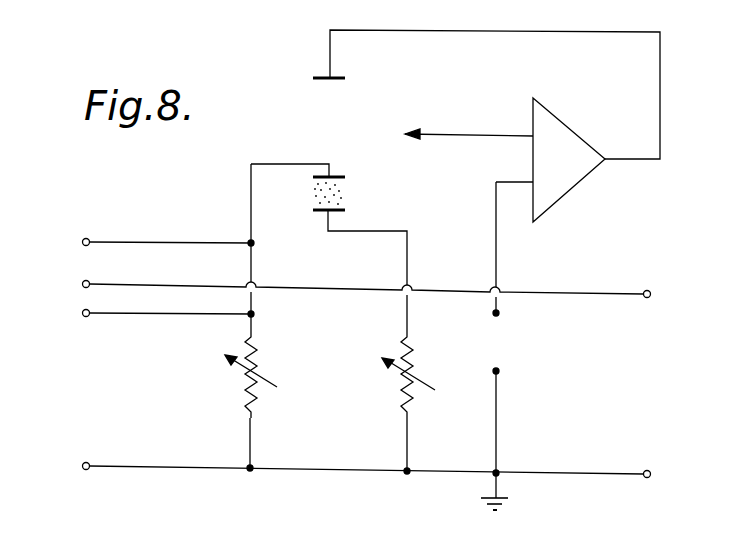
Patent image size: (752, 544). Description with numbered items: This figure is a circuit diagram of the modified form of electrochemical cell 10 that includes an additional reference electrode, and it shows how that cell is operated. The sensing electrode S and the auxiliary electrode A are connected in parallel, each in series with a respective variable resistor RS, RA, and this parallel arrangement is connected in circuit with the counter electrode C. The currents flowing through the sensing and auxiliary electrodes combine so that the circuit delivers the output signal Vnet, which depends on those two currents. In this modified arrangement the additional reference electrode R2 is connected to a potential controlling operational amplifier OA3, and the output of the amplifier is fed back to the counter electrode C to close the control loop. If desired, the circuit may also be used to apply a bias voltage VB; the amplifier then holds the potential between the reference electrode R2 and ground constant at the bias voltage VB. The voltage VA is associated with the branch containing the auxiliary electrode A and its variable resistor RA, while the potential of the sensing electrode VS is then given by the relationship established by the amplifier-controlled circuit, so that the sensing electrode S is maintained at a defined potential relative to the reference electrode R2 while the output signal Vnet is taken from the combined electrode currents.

The sensor element (dotted region between plates) 10 is at (343, 194).
The auxiliary electrode A is at (351, 170).
The sensing electrode S is at (318, 215).
The counter electrode C is at (358, 74).
The reference electrode R2 is at (417, 135).
The potential controlling operational amplifier OA3 is at (550, 160).
The variable resistor RA is at (254, 375).
The variable resistor RS is at (412, 383).
The voltage VA is at (88, 388).
The bias voltage VB is at (493, 327).
The potential of the sensing electrode VS is at (645, 393).
The output signal Vnet is at (332, 281).